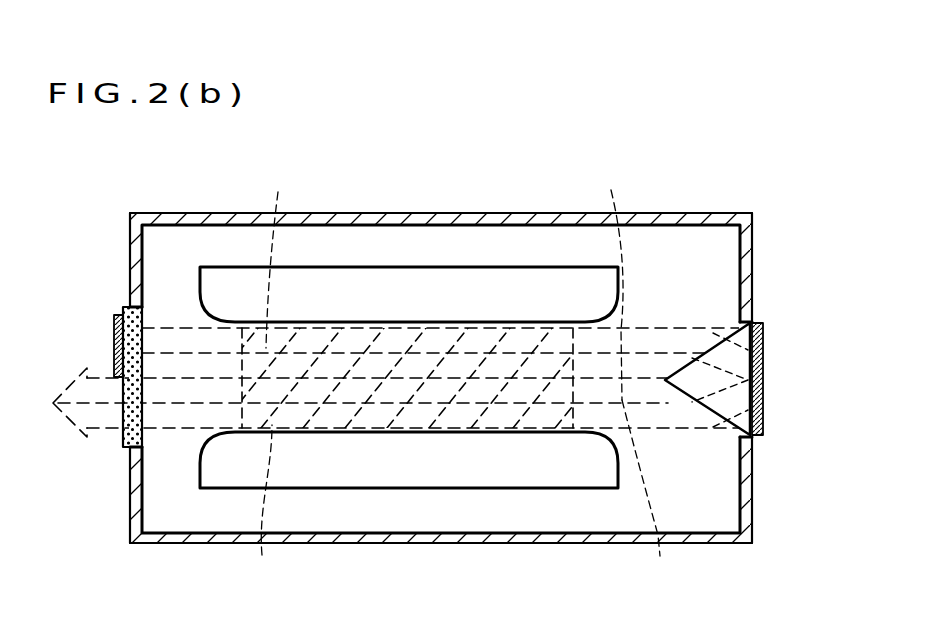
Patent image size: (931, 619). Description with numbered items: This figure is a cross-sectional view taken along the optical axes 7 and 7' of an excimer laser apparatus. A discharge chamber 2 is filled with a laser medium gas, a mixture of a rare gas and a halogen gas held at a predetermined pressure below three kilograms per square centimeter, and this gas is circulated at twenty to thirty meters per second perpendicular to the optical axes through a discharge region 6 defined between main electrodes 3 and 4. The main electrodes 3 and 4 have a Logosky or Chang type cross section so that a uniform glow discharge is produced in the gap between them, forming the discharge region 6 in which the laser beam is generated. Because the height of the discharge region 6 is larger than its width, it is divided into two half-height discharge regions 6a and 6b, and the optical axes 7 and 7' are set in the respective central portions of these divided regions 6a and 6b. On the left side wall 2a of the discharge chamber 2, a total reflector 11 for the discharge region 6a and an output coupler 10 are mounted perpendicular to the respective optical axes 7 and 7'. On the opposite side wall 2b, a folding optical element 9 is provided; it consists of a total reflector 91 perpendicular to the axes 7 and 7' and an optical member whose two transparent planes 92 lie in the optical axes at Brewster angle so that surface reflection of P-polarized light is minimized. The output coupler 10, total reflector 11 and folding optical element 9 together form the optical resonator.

The discharge chamber 2 is at (355, 213).
The left side wall 2a is at (130, 247).
The right end wall of housing 2b is at (752, 250).
The main electrode 3 is at (424, 292).
The main electrode 4 is at (437, 468).
The discharge region 6 is at (197, 432).
The divided discharge region 6a is at (269, 257).
The divided discharge region 6b is at (268, 505).
The optical axis 7 is at (610, 282).
The optical axis 7' is at (651, 493).
The folding optical element 9 is at (738, 303).
The total reflector 91 is at (765, 385).
The transparent plane 92 is at (705, 350).
The output coupler 10 is at (123, 446).
The total reflector 11 is at (114, 320).